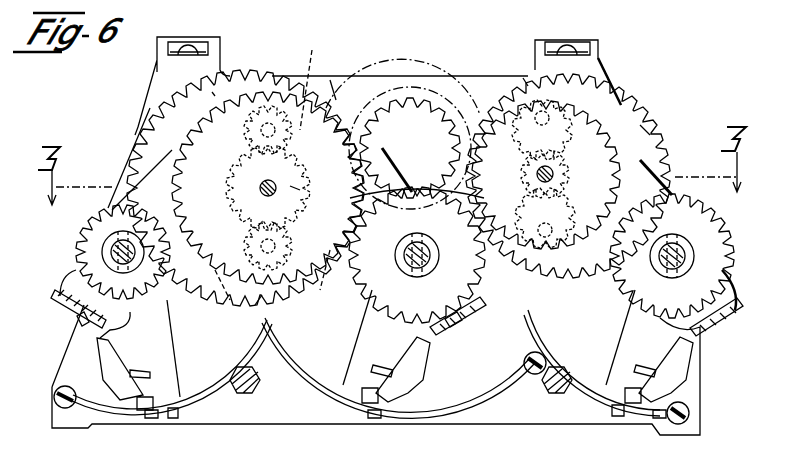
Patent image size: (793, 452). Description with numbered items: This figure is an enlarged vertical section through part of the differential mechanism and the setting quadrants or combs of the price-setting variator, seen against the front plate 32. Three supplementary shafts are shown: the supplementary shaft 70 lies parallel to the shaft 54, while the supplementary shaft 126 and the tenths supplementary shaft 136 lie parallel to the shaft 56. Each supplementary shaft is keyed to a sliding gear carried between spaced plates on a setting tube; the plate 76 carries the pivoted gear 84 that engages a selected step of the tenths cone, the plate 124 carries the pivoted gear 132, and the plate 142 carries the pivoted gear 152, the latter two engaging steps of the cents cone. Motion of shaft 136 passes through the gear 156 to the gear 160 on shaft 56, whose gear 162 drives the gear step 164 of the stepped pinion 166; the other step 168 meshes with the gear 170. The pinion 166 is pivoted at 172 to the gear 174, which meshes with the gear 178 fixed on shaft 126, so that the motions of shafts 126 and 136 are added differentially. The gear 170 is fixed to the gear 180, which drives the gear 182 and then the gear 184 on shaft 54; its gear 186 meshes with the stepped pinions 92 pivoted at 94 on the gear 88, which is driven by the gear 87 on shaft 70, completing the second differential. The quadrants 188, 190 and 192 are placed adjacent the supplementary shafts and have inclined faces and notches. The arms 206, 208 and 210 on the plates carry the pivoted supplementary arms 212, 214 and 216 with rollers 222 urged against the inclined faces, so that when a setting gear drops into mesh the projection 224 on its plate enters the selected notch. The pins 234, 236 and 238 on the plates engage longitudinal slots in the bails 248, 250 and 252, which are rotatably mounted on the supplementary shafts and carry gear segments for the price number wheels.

The front plate 32 is at (380, 84).
The shaft 54 is at (536, 175).
The shaft 56 is at (258, 190).
The supplementary shaft 70 is at (690, 248).
The plate 76 is at (665, 160).
The gear 84 is at (647, 120).
The gear 87 is at (705, 218).
The gear 88 is at (598, 96).
The stepped pinion 92 is at (525, 80).
The pivot 94 is at (548, 120).
The plate 124 is at (412, 180).
The supplementary shaft 126 is at (408, 258).
The gear 132 is at (400, 128).
The tenths supplementary shaft 136 is at (113, 248).
The plate 142 is at (73, 272).
The gear 152 is at (138, 130).
The gear 156 is at (112, 212).
The gear 160 is at (212, 92).
The gear 162 is at (295, 188).
The gear step 164 is at (290, 92).
The stepped pinion 166 is at (290, 135).
The step 168 is at (310, 100).
The gear 170 is at (246, 160).
The pivot 172 is at (262, 100).
The gear 174 is at (345, 90).
The gear 178 is at (372, 295).
The gear 180 is at (235, 160).
The gear 182 is at (412, 60).
The gear 184 is at (598, 128).
The gear 186 is at (568, 170).
The quadrant 188 is at (570, 378).
The quadrant 190 is at (435, 415).
The quadrant 192 is at (205, 388).
The arm 206 is at (628, 323).
The arm 208 is at (362, 337).
The arm 210 is at (118, 343).
The supplementary arm 212 is at (688, 360).
The supplementary arm 214 is at (412, 378).
The supplementary arm 216 is at (108, 368).
The roller 222 is at (150, 418).
The projection 224 is at (175, 418).
The pin 234 is at (715, 324).
The pin 236 is at (452, 330).
The pin 238 is at (78, 320).
The bail 248 is at (738, 295).
The bail 250 is at (470, 315).
The bail 252 is at (56, 290).